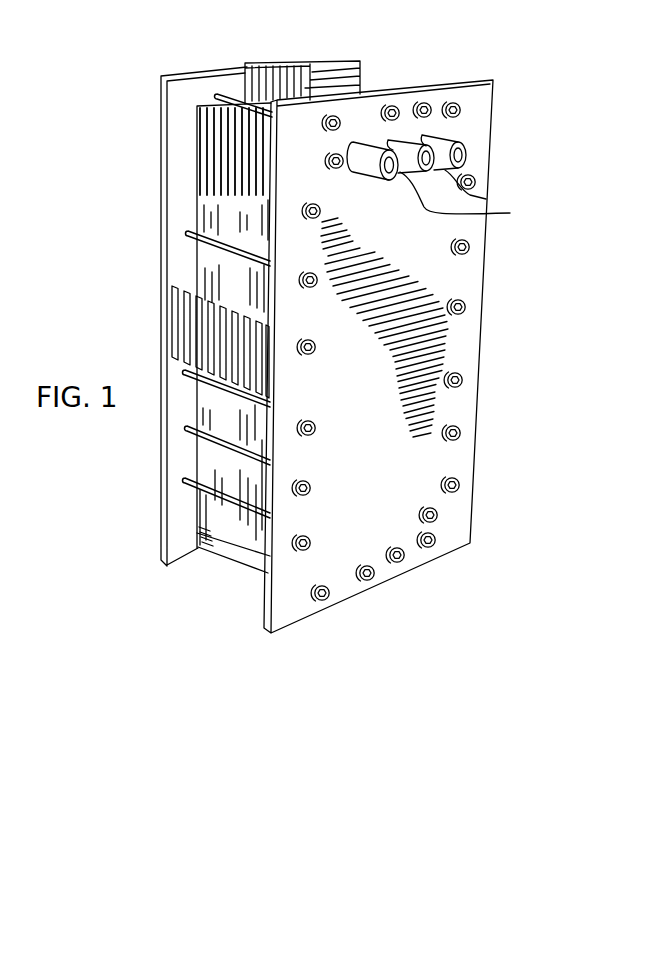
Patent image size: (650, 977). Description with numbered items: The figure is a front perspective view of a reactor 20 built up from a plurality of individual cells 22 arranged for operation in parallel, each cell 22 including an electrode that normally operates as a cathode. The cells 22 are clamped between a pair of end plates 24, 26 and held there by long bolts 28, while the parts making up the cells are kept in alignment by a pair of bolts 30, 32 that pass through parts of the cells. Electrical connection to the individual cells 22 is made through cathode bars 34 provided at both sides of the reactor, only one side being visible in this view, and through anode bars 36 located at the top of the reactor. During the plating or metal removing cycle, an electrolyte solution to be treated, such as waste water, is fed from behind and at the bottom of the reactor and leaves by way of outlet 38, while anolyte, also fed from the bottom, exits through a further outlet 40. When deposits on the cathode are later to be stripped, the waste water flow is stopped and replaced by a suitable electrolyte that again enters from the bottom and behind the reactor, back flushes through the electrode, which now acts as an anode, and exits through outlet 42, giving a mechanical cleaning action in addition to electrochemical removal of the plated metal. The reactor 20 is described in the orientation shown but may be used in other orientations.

The reactor 20 is at (522, 171).
The individual cells 22 is at (197, 141).
The end plate 24 is at (162, 548).
The end plate 26 is at (305, 633).
The long bolts 28 is at (425, 101).
The bolt 30 is at (340, 172).
The bolt 32 is at (425, 506).
The cathode bars 34 is at (187, 332).
The anode bars 36 is at (266, 60).
The outlet 38 is at (486, 200).
The outlet 40 is at (469, 197).
The outlet 42 is at (463, 150).